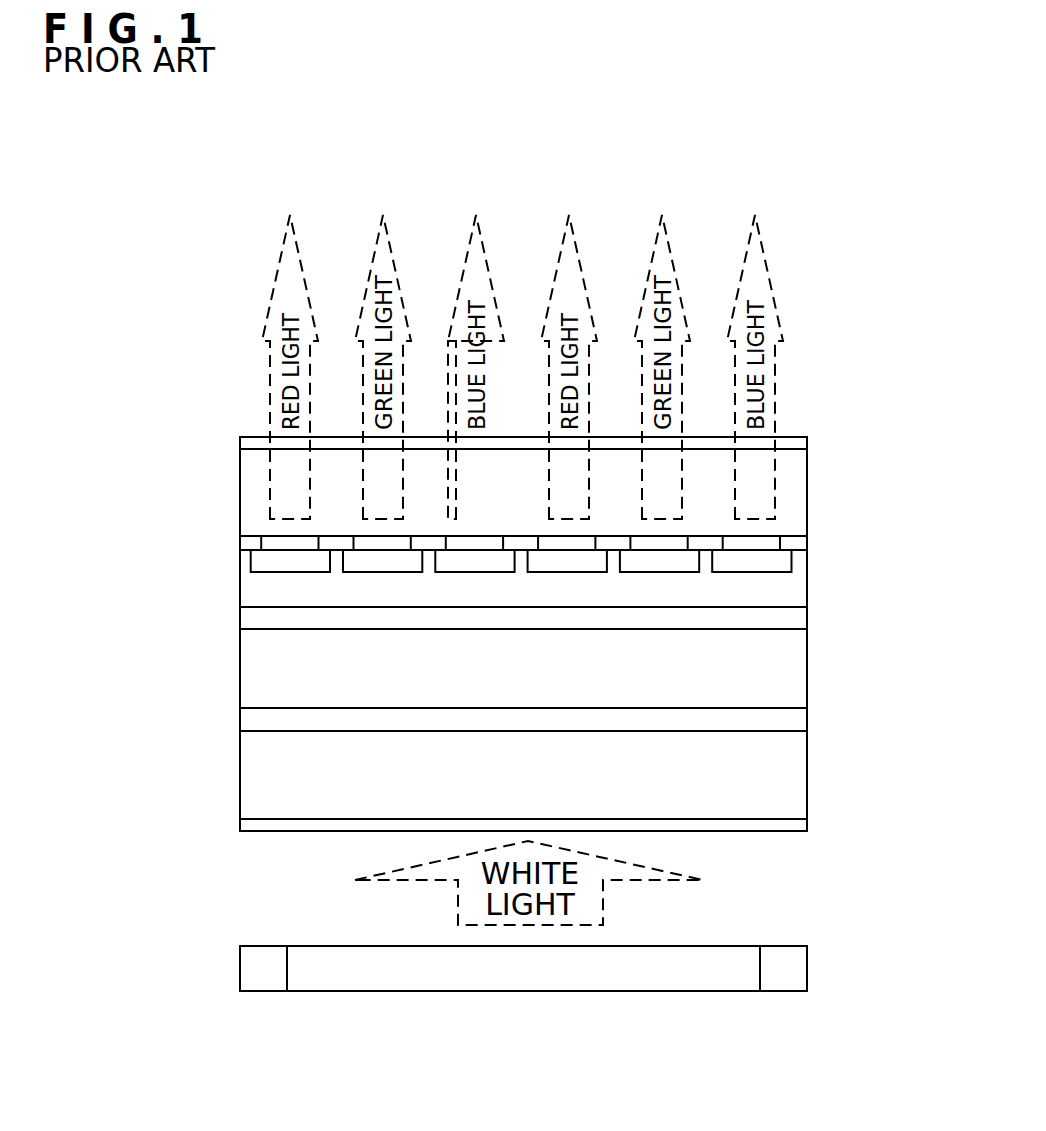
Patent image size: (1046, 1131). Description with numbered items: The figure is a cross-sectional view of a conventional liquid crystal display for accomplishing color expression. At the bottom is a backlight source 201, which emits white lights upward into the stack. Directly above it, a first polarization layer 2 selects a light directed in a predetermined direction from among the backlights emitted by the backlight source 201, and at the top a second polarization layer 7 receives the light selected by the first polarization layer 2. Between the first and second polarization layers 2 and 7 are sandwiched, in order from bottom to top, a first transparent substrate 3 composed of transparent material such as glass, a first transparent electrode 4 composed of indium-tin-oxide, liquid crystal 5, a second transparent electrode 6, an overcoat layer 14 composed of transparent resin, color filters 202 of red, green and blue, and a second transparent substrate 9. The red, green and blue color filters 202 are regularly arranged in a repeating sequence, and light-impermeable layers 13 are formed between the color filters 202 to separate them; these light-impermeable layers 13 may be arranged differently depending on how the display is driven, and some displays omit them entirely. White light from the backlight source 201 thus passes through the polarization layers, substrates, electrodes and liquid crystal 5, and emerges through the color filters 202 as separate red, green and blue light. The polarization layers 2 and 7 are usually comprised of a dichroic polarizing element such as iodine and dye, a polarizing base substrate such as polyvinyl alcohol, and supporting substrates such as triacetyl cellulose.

The first polarization layer 2 is at (255, 827).
The first transparent substrate 3 is at (253, 770).
The first transparent electrode 4 is at (257, 718).
The liquid crystal 5 is at (257, 670).
The second transparent electrode 6 is at (257, 617).
The second polarization layer 7 is at (250, 443).
The second transparent substrate 9 is at (783, 502).
The light-impermeable layers 13 is at (250, 545).
The overcoat layer 14 is at (258, 585).
The backlight source 201 is at (343, 955).
The color filters 202 is at (787, 560).